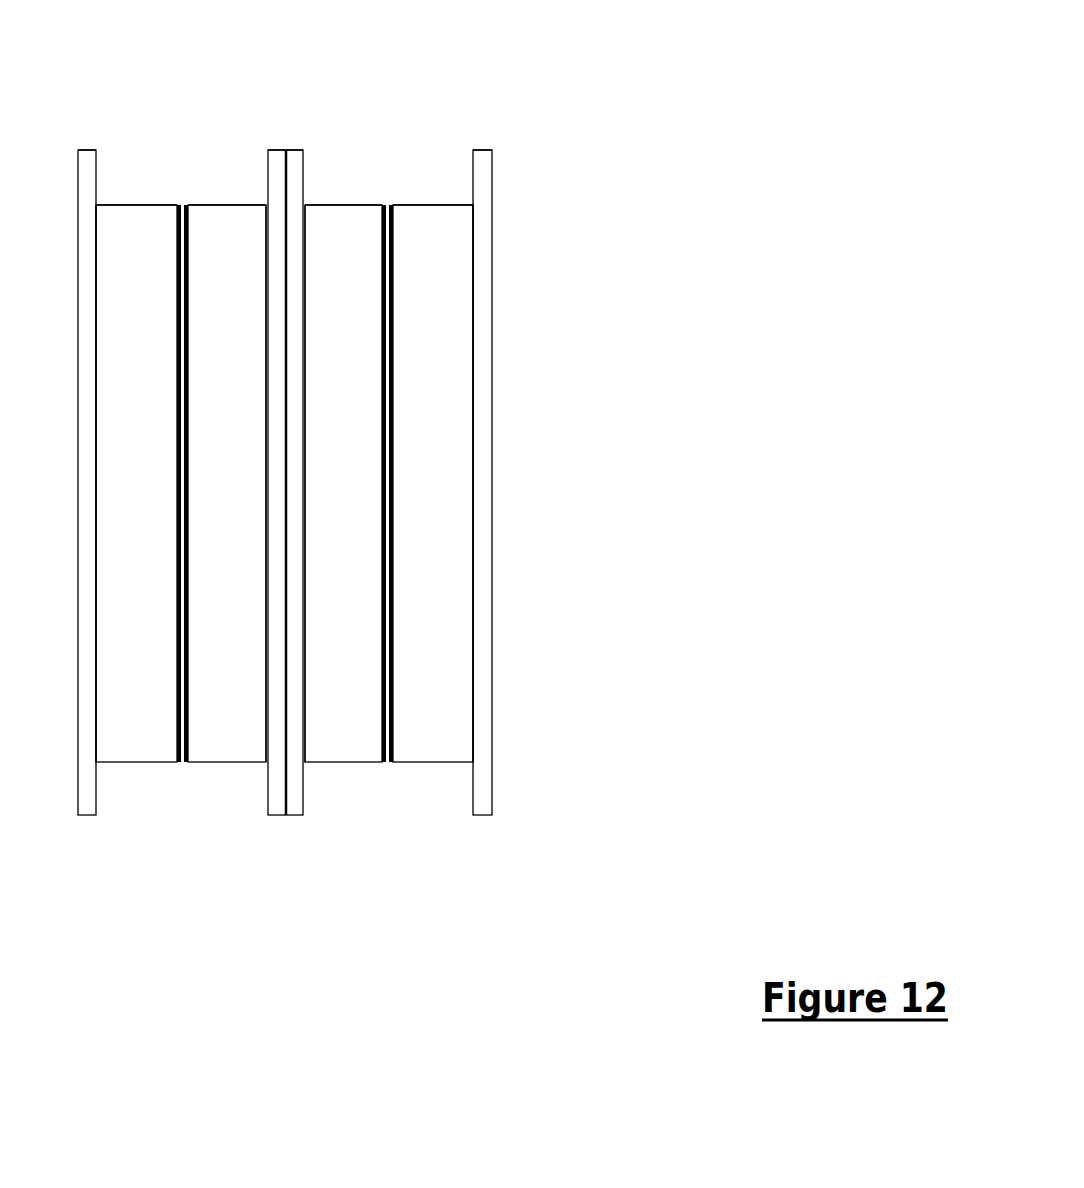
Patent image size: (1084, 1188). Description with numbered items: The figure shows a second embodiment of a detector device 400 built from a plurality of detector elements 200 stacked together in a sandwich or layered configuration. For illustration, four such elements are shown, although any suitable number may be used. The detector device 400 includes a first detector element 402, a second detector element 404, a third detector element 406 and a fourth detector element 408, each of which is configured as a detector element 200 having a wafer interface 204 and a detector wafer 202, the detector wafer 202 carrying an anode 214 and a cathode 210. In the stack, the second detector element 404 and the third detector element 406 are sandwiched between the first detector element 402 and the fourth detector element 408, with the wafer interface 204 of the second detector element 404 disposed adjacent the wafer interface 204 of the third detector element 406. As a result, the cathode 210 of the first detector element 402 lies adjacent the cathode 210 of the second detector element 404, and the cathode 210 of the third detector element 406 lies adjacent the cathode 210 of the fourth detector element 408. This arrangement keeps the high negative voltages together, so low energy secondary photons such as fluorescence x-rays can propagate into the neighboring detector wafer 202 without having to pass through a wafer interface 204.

The detector device 400 is at (632, 142).
The detector element 200 is at (89, 817).
The wafer interface 204 is at (90, 148).
The detector wafer 202 is at (133, 203).
The cathode 210 is at (176, 276).
The anode 214 is at (98, 638).
The first detector element 402 is at (136, 483).
The second detector element 404 is at (227, 483).
The third detector element 406 is at (343, 483).
The fourth detector element 408 is at (433, 483).